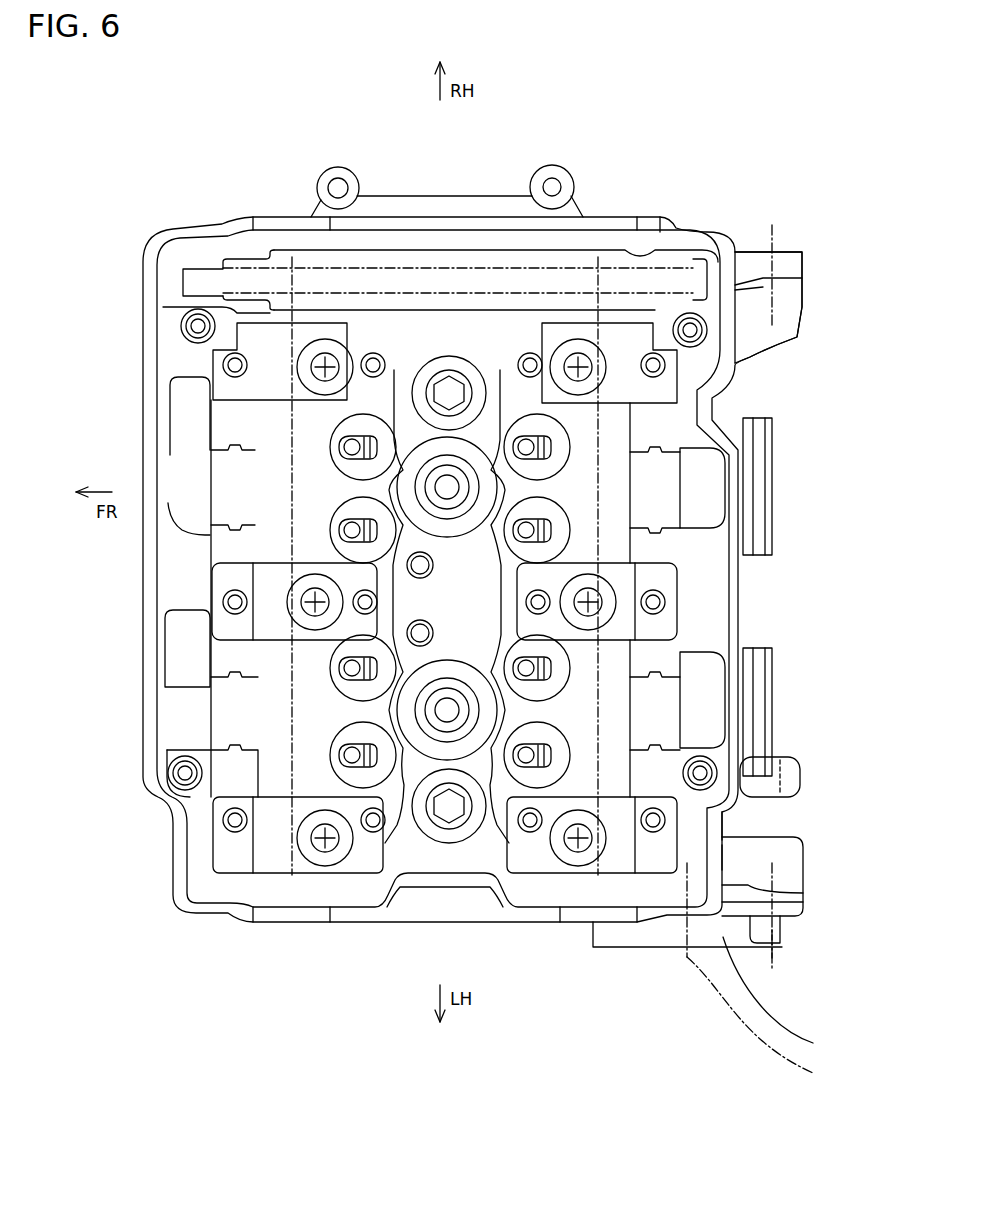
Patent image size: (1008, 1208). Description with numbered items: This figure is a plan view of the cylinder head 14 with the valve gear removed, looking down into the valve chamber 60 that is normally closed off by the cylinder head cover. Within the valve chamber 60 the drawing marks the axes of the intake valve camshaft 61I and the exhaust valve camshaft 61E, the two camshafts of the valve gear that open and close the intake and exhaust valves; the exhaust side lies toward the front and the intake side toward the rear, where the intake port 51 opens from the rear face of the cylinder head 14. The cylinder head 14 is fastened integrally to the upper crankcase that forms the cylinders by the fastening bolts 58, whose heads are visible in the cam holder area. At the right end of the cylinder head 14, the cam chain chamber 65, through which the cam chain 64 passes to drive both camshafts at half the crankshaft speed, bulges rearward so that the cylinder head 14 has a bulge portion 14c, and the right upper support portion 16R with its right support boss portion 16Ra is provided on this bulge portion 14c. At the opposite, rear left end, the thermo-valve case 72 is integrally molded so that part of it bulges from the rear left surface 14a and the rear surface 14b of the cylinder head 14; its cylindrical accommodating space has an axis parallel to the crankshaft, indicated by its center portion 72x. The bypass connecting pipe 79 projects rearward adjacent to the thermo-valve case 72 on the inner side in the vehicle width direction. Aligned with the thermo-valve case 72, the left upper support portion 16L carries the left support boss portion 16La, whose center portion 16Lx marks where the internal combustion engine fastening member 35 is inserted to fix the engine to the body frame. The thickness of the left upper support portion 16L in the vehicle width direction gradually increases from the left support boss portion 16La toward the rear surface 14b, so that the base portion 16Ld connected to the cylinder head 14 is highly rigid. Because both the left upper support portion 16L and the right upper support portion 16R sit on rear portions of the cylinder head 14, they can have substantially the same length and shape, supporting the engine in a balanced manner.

The cylinder head 14 is at (134, 286).
The rear left surface 14a is at (646, 925).
The rear surface 14b is at (724, 858).
The bulge portion 14c is at (739, 270).
The right upper support portion 16R is at (800, 307).
The right support boss portion 16Ra is at (790, 252).
The left upper support portion 16L is at (800, 873).
The left support boss portion 16La is at (788, 922).
The base portion 16Ld is at (730, 835).
The center portion of the left support boss portion 16Lx is at (777, 963).
The internal combustion engine fastening member 35 is at (802, 973).
The intake port 51 is at (772, 490).
The fastening bolts 58 is at (325, 840).
The valve chamber 60 is at (563, 488).
The exhaust valve camshaft 61E is at (292, 763).
The intake valve camshaft 61I is at (612, 772).
The cam chain 64 is at (586, 268).
The cam chain chamber 65 is at (660, 240).
The thermo-valve case 72 is at (782, 995).
The center portion of the thermo-valve case 72x is at (769, 975).
The bypass connecting pipe 79 is at (800, 777).